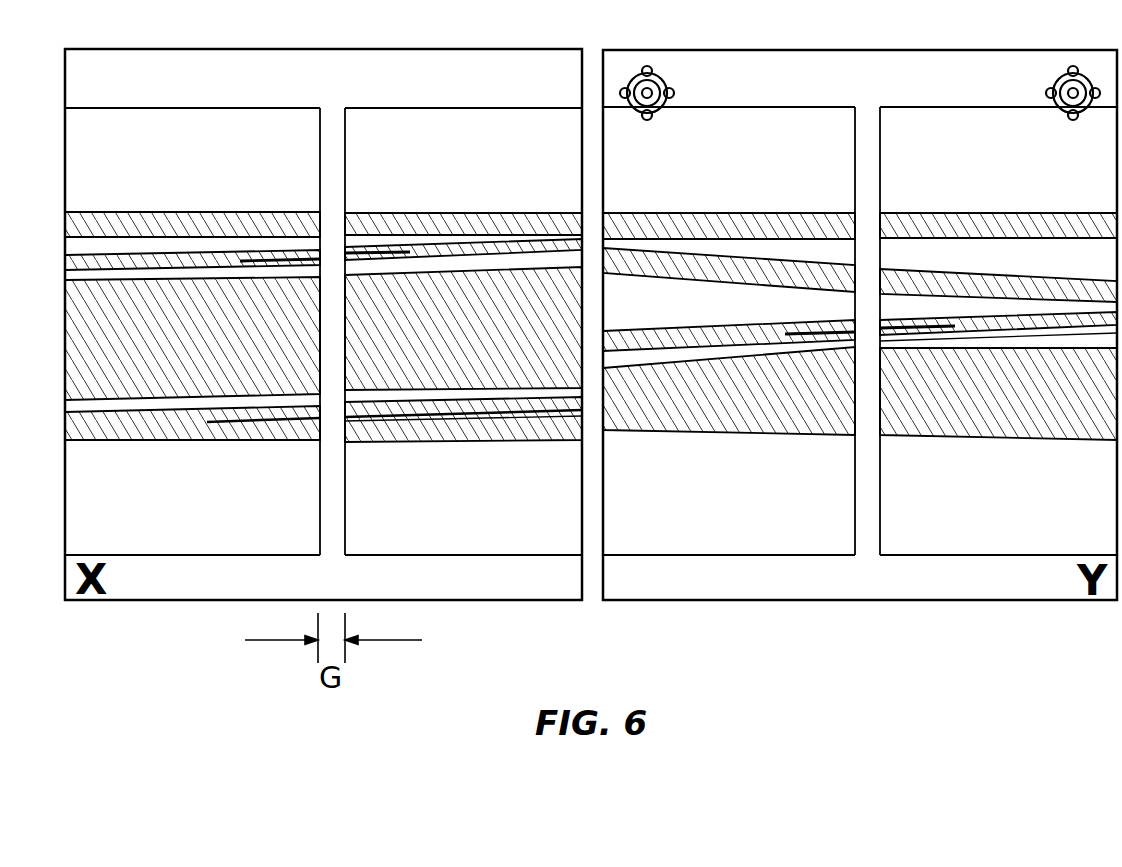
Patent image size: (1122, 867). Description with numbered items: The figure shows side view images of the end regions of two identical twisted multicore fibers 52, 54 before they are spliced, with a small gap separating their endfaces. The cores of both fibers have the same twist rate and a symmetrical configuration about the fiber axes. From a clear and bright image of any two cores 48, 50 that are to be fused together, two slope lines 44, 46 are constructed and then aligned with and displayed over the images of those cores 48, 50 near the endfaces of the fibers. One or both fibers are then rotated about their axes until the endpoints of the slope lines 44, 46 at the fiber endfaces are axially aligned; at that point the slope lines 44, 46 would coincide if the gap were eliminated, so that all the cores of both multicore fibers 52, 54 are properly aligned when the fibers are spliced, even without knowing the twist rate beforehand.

The slope line 44 is at (290, 256).
The slope line 46 is at (365, 256).
The core 48 is at (162, 270).
The core 50 is at (481, 256).
The multicore fiber 52 is at (169, 212).
The multicore fiber 54 is at (478, 213).